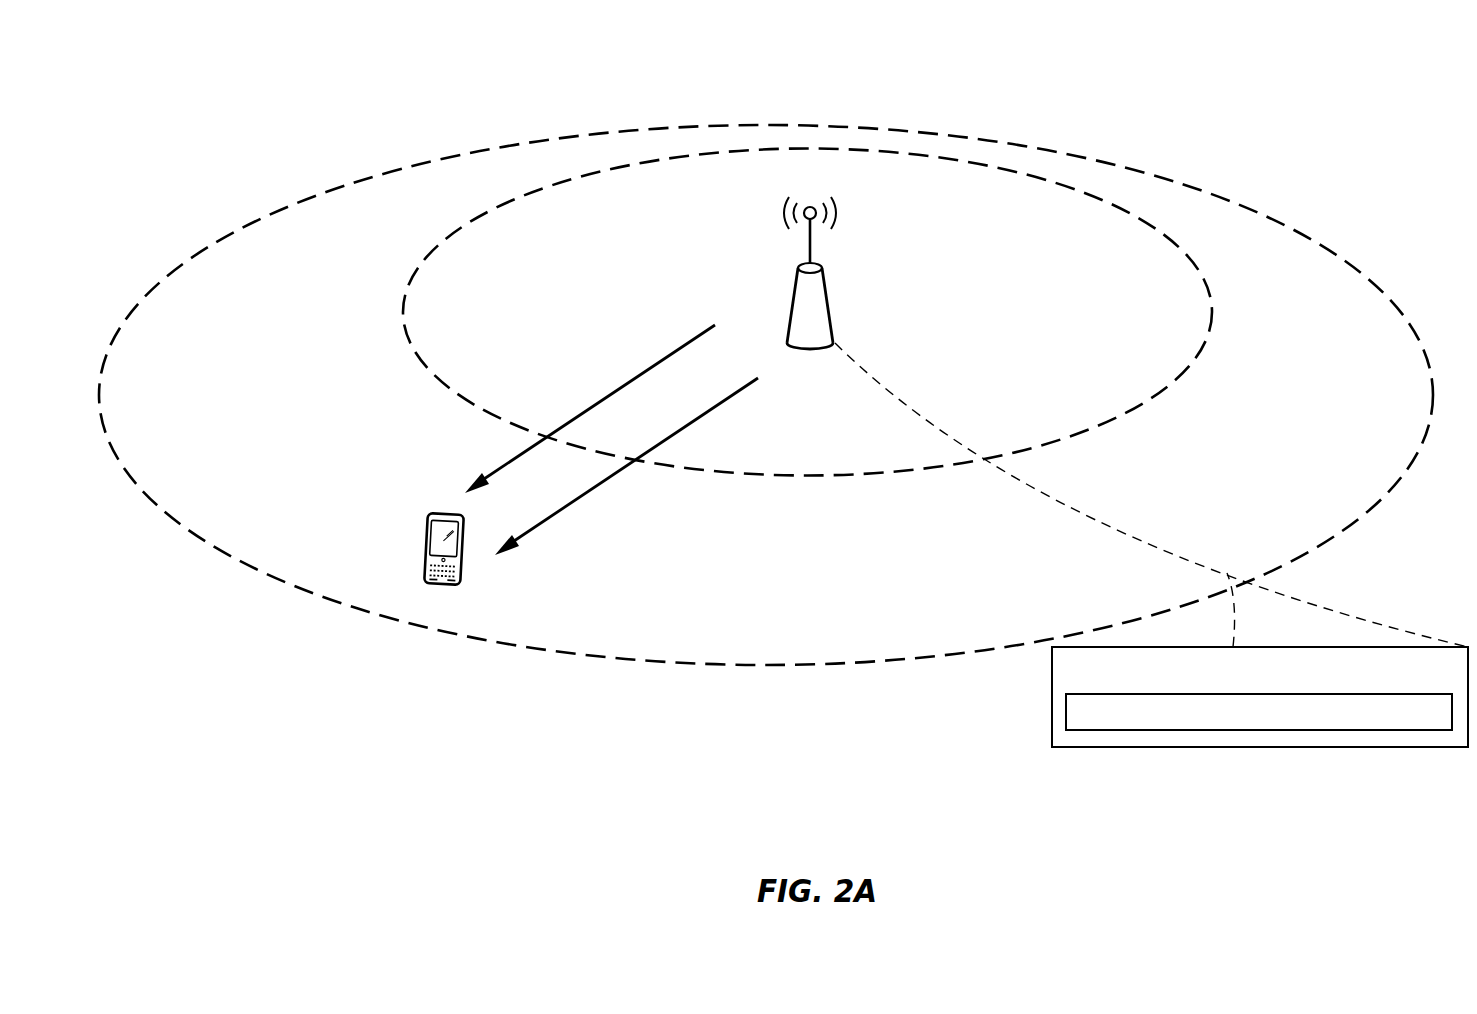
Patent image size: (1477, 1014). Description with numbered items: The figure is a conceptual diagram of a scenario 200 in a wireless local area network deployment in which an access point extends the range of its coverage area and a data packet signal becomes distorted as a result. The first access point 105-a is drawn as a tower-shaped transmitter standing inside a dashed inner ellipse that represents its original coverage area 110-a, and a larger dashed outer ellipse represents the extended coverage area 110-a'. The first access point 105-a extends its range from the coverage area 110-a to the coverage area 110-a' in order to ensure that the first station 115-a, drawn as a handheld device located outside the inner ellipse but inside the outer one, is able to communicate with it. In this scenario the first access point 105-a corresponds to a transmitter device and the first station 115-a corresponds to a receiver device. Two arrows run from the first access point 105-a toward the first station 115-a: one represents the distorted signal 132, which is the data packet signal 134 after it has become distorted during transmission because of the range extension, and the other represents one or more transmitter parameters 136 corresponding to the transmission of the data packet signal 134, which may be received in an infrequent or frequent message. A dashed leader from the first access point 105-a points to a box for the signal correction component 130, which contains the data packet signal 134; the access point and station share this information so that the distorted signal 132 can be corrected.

The scenario 200 is at (190, 75).
The extended coverage area 110-a' is at (766, 395).
The coverage area 110-a is at (781, 312).
The AP1 105-a is at (824, 279).
The STA1 115-a is at (427, 521).
The distorted signal 132 is at (673, 350).
The transmitter parameters 136 is at (723, 400).
The signal correction component 130 is at (1151, 545).
The data packet signal 134 is at (1259, 712).